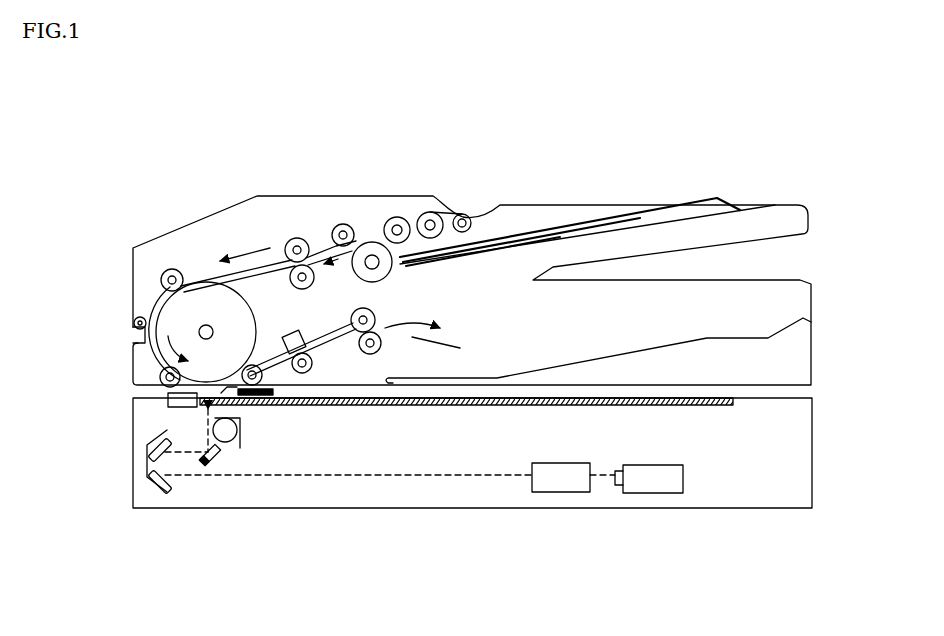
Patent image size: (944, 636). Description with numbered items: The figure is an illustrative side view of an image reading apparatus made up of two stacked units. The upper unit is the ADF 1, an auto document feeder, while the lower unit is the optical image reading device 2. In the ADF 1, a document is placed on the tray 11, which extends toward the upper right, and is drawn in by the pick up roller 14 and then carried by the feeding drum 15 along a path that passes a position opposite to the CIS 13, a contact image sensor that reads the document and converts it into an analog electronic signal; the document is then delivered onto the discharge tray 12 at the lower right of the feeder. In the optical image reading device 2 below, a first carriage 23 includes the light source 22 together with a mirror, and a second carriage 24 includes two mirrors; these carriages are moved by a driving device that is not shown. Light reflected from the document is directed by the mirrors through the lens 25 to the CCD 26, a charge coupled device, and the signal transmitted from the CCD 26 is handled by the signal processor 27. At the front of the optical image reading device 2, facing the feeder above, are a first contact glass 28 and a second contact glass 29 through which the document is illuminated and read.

The ADF 1 is at (356, 186).
The optical image reading device 2 is at (415, 514).
The tray 11 is at (567, 210).
The discharge tray 12 is at (577, 361).
The CIS 13 is at (296, 332).
The pick up roller 14 is at (435, 198).
The feeding drum 15 is at (202, 280).
The light source 22 is at (228, 442).
The first carriage 23 is at (213, 458).
The second carriage 24 is at (147, 462).
The lens 25 is at (557, 492).
The CCD 26 is at (615, 485).
The signal processor 27 is at (683, 478).
The first contact glass 28 is at (208, 408).
The second contact glass 29 is at (710, 407).